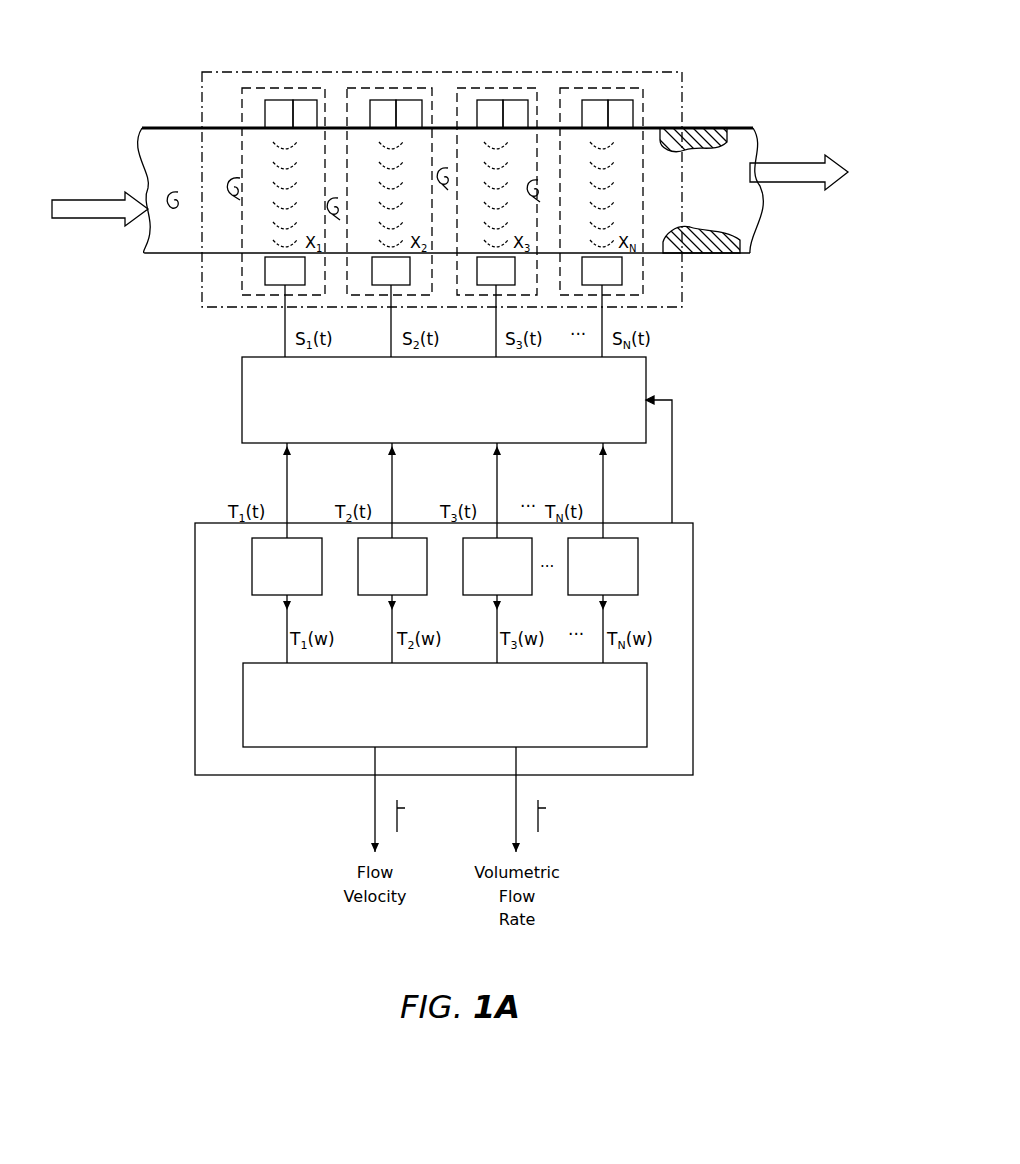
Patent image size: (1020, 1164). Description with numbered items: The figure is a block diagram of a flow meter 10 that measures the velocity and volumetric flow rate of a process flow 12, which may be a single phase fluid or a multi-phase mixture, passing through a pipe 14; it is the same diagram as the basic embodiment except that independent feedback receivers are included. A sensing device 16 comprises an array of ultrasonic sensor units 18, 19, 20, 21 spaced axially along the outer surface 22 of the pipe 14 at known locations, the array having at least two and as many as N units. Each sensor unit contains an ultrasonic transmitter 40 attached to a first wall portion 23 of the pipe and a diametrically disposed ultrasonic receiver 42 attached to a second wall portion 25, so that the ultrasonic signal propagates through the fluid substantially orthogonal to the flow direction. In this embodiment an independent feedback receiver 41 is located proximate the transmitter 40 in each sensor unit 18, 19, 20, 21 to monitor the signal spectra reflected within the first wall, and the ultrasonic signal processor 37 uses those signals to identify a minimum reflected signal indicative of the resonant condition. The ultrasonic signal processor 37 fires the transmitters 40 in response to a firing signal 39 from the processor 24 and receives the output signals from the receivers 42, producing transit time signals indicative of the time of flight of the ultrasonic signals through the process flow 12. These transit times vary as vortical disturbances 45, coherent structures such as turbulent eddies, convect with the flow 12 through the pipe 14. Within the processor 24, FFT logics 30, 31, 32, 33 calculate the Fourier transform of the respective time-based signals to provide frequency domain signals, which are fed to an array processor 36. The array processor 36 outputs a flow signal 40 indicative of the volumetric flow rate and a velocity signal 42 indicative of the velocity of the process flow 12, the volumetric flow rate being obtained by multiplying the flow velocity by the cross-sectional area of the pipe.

The flow meter 10 is at (792, 354).
The process flow 12 is at (92, 198).
The pipe 14 is at (780, 222).
The sensing device 16 is at (684, 294).
The first ultrasonic sensor unit 18 is at (292, 72).
The second ultrasonic sensor unit 19 is at (396, 72).
The third ultrasonic sensor unit 20 is at (504, 72).
The Nth ultrasonic sensor unit 21 is at (610, 72).
The outer surface of the pipe 22 is at (178, 238).
The first wall portion 23 is at (700, 128).
The processor 24 is at (695, 578).
The second wall portion 25 is at (718, 252).
The first FFT logic 30 is at (305, 538).
The second FFT logic 31 is at (413, 538).
The third FFT logic 32 is at (506, 538).
The Nth FFT logic 33 is at (620, 538).
The array processor 36 is at (648, 710).
The ultrasonic signal processor 37 is at (240, 405).
The firing signal 39 is at (675, 456).
The ultrasonic transmitter 40 is at (434, 444).
The feedback receiver 41 is at (498, 80).
The ultrasonic receiver 42 is at (450, 553).
The vortical disturbances 45 is at (332, 200).